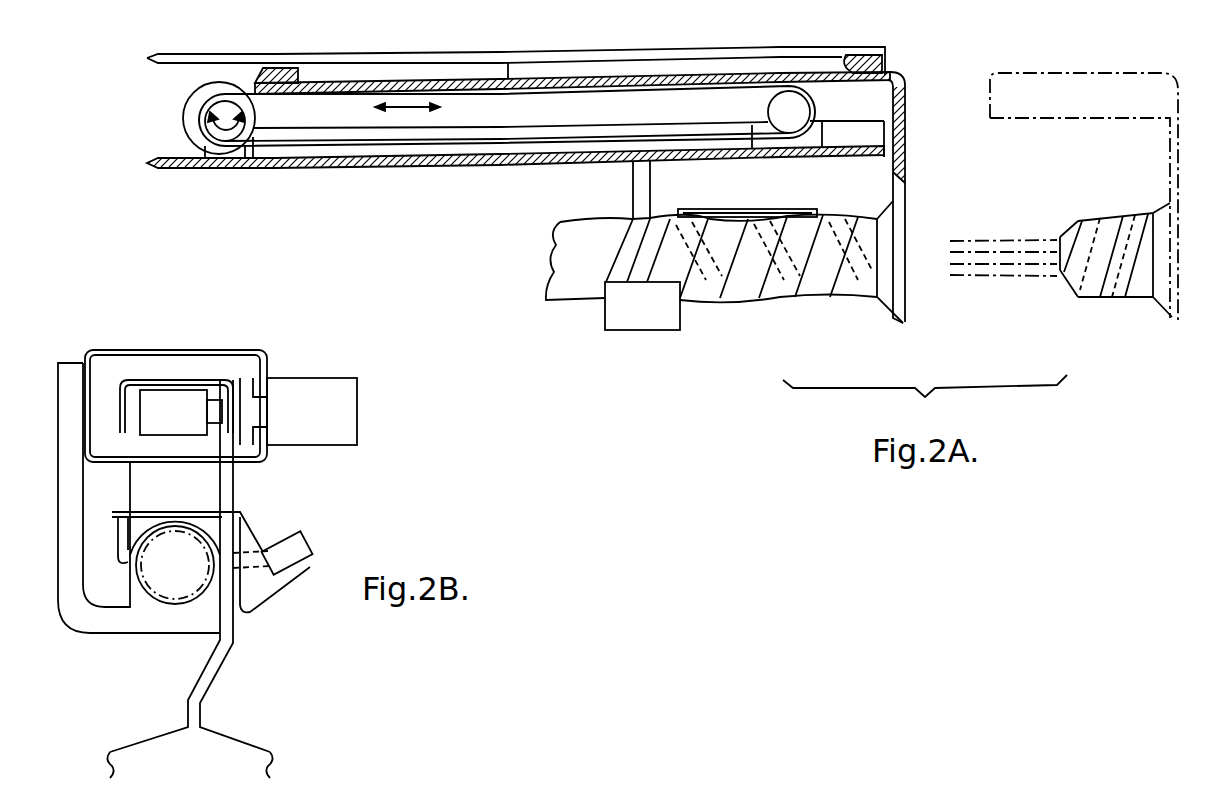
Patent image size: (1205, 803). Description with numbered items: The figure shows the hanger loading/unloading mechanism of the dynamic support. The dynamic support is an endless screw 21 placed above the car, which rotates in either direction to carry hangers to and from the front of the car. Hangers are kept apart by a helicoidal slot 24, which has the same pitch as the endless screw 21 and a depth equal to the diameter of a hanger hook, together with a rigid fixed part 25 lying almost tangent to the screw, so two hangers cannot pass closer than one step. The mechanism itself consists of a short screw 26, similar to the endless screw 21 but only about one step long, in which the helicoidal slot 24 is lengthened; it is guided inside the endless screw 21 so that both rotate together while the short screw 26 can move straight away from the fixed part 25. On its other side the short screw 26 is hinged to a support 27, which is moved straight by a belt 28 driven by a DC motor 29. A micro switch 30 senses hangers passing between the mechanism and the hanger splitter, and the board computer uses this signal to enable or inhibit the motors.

In FIG. 2A, the endless screw 21 is at (560, 291).
In FIG. 2A, the helicoidal slot 24 is at (711, 304).
In FIG. 2A, the rigid fixed part 25 is at (799, 208).
In FIG. 2B, the rigid fixed part 25 is at (249, 510).
In FIG. 2A, the screw 26 is at (822, 301).
In FIG. 2A, the support 27 is at (903, 322).
In FIG. 2A, the belt 28 is at (428, 143).
In FIG. 2A, the DC motor 29 is at (221, 86).
In FIG. 2B, the DC motor 29 is at (328, 387).
In FIG. 2B, the micro switch 30 is at (310, 551).